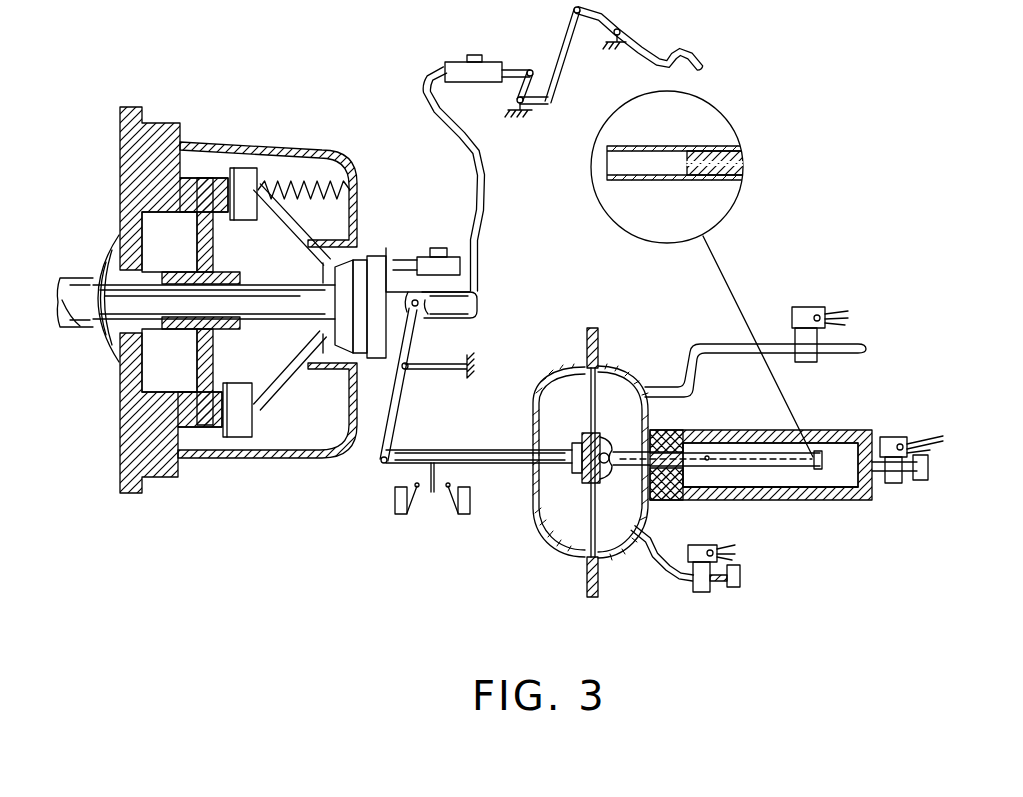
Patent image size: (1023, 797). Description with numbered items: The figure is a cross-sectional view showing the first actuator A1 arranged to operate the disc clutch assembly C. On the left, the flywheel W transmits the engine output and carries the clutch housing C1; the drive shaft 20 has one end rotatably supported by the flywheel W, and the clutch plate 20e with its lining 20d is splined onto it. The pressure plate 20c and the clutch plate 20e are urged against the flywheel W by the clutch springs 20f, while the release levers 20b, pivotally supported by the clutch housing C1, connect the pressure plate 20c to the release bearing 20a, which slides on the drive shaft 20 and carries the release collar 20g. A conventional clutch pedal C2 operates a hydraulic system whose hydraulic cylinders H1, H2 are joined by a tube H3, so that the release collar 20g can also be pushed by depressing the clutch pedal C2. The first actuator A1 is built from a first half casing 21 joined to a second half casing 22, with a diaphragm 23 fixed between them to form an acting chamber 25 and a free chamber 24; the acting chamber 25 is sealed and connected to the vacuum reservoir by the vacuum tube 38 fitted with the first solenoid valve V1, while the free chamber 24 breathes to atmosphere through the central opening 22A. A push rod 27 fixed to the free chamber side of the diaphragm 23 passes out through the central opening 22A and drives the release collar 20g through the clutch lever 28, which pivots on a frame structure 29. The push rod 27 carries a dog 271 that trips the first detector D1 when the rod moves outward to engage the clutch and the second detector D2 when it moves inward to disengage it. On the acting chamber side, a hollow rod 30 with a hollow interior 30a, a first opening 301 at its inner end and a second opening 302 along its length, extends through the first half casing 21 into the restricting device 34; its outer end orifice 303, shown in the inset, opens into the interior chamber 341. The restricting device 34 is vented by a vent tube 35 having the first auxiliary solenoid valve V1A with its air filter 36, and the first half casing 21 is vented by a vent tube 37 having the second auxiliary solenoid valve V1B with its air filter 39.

The flywheel W is at (126, 106).
The disc clutch assembly C is at (328, 134).
The clutch housing C1 is at (232, 145).
The clutch pedal C2 is at (662, 50).
The drive shaft 20 is at (476, 292).
The release bearing 20a is at (366, 256).
The release levers 20b is at (281, 394).
The pressure plate 20c is at (240, 438).
The lining 20d is at (215, 427).
The clutch plate 20e is at (213, 345).
The clutch springs 20f is at (289, 184).
The release collar 20g is at (386, 250).
The hydraulic cylinder H1 is at (462, 62).
The hydraulic cylinder H2 is at (452, 254).
The hydraulic hose H3 is at (485, 158).
The first half casing 21 is at (648, 512).
The second half casing 22 is at (536, 463).
The central opening 22A is at (536, 440).
The diaphragm 23 is at (597, 388).
The free chamber 24 is at (536, 442).
The acting chamber 25 is at (612, 406).
The push rod 27 is at (518, 465).
The dog 271 is at (430, 477).
The clutch lever 28 is at (400, 414).
The frame structure 29 is at (462, 360).
The hollow rod 30 is at (803, 478).
The hollow interior 30a is at (631, 152).
The first opening 301 is at (624, 477).
The second opening 302 is at (708, 470).
The orifice 303 is at (712, 152).
The restricting device 34 is at (740, 324).
The interior chamber 341 is at (819, 500).
The vent tube 35 is at (881, 484).
The air filter 36 is at (930, 467).
The vent tube 37 is at (664, 578).
The vacuum tube 38 is at (777, 343).
The air filter 39 is at (742, 590).
The first actuator A1 is at (577, 463).
The first detector D1 is at (398, 515).
The second detector D2 is at (462, 514).
The first solenoid valve V1 is at (822, 307).
The first auxiliary solenoid valve V1A is at (906, 437).
The second auxiliary solenoid valve V1B is at (702, 593).